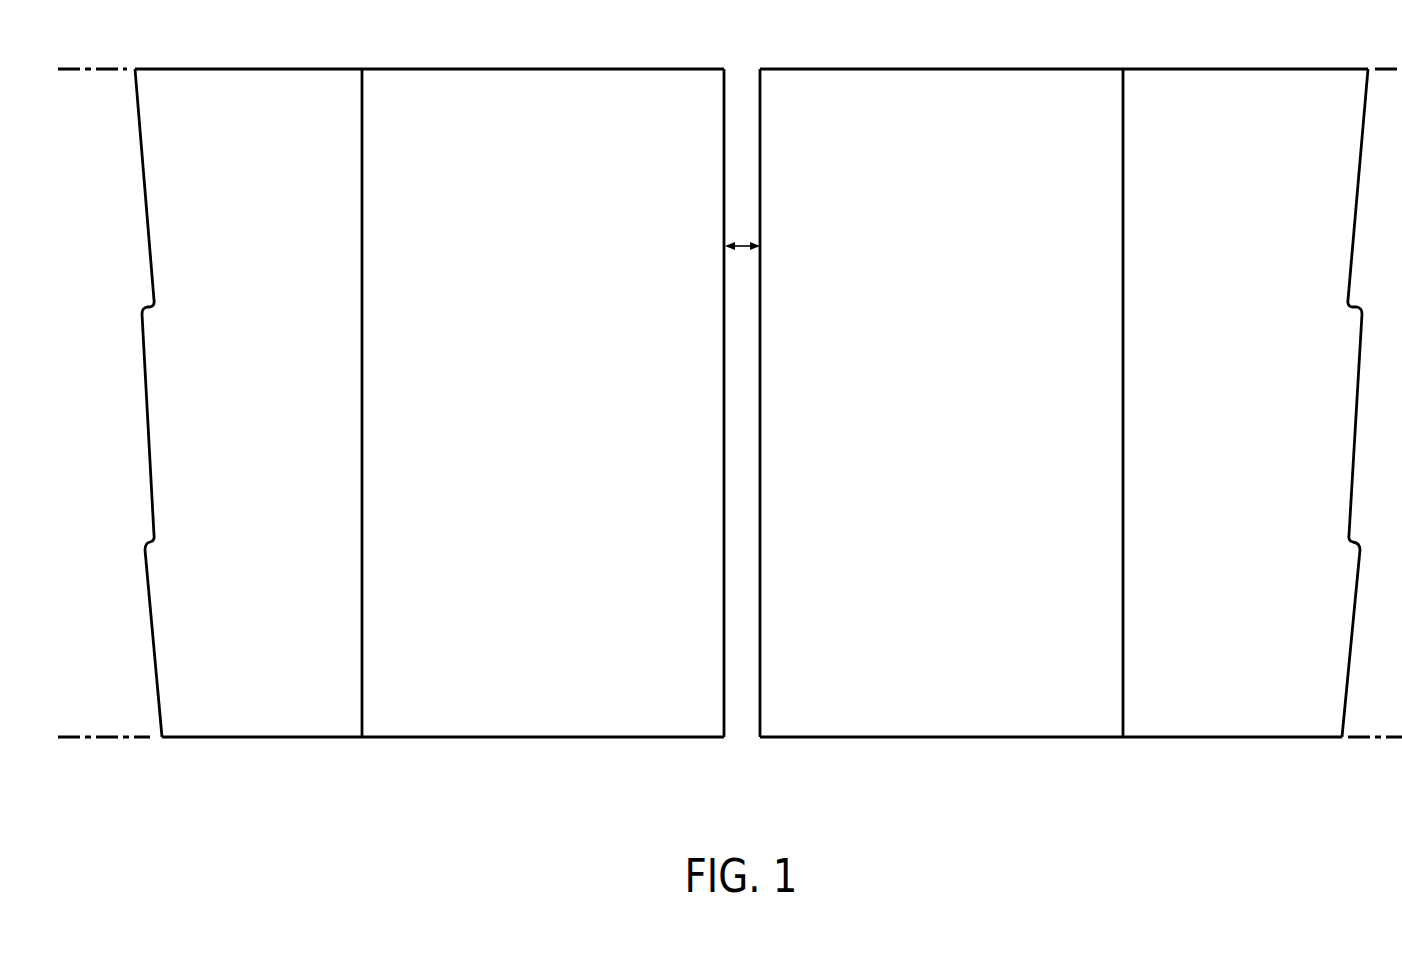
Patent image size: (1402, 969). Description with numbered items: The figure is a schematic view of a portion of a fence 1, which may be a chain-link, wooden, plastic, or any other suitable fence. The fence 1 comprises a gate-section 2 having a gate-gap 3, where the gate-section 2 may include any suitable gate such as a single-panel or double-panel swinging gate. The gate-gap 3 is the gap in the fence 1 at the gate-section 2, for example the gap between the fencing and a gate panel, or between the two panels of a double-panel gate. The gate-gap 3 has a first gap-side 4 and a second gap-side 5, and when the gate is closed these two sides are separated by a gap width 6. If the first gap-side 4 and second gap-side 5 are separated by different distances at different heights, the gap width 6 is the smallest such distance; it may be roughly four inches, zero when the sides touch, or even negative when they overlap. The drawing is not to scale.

The fence 1 is at (277, 737).
The gate-section 2 is at (362, 753).
The gate-gap 3 is at (764, 369).
The first gap-side 4 is at (725, 432).
The second gap-side 5 is at (760, 566).
The gap width 6 is at (742, 250).